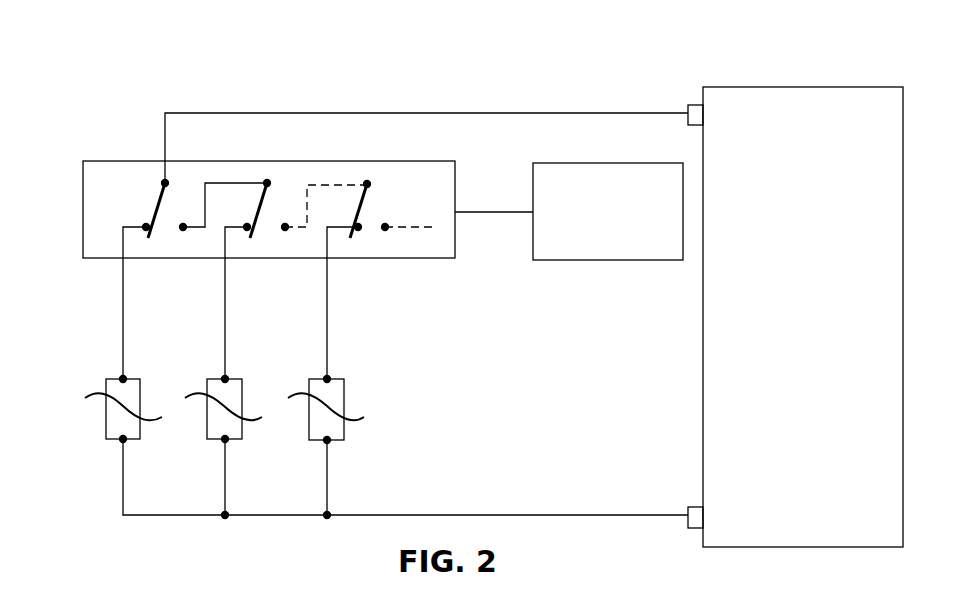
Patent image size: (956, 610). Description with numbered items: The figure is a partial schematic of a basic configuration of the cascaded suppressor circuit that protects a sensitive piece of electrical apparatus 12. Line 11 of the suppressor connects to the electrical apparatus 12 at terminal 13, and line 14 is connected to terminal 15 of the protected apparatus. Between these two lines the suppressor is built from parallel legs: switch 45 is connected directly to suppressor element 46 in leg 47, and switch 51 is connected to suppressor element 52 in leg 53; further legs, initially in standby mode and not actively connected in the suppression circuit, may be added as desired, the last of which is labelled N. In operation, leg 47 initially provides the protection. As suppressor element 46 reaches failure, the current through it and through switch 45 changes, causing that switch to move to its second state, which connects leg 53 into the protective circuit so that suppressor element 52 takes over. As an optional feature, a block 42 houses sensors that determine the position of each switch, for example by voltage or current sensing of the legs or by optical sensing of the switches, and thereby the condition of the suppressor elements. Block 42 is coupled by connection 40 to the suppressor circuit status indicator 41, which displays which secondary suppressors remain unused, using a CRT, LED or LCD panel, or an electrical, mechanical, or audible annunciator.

The line 11 is at (466, 113).
The electrical apparatus 12 is at (777, 87).
The terminal 13 is at (690, 105).
The line 14 is at (590, 516).
The terminal 15 is at (692, 506).
The connection 40 is at (493, 212).
The suppressor circuit status indicator 41 is at (600, 260).
The block 42 is at (103, 160).
The switch 45 is at (158, 207).
The suppressor element 46 is at (106, 420).
The leg 47 is at (108, 330).
The switch 51 is at (260, 207).
The suppressor element 52 is at (207, 422).
The leg 53 is at (245, 335).
The Nth branch circuit N is at (347, 335).